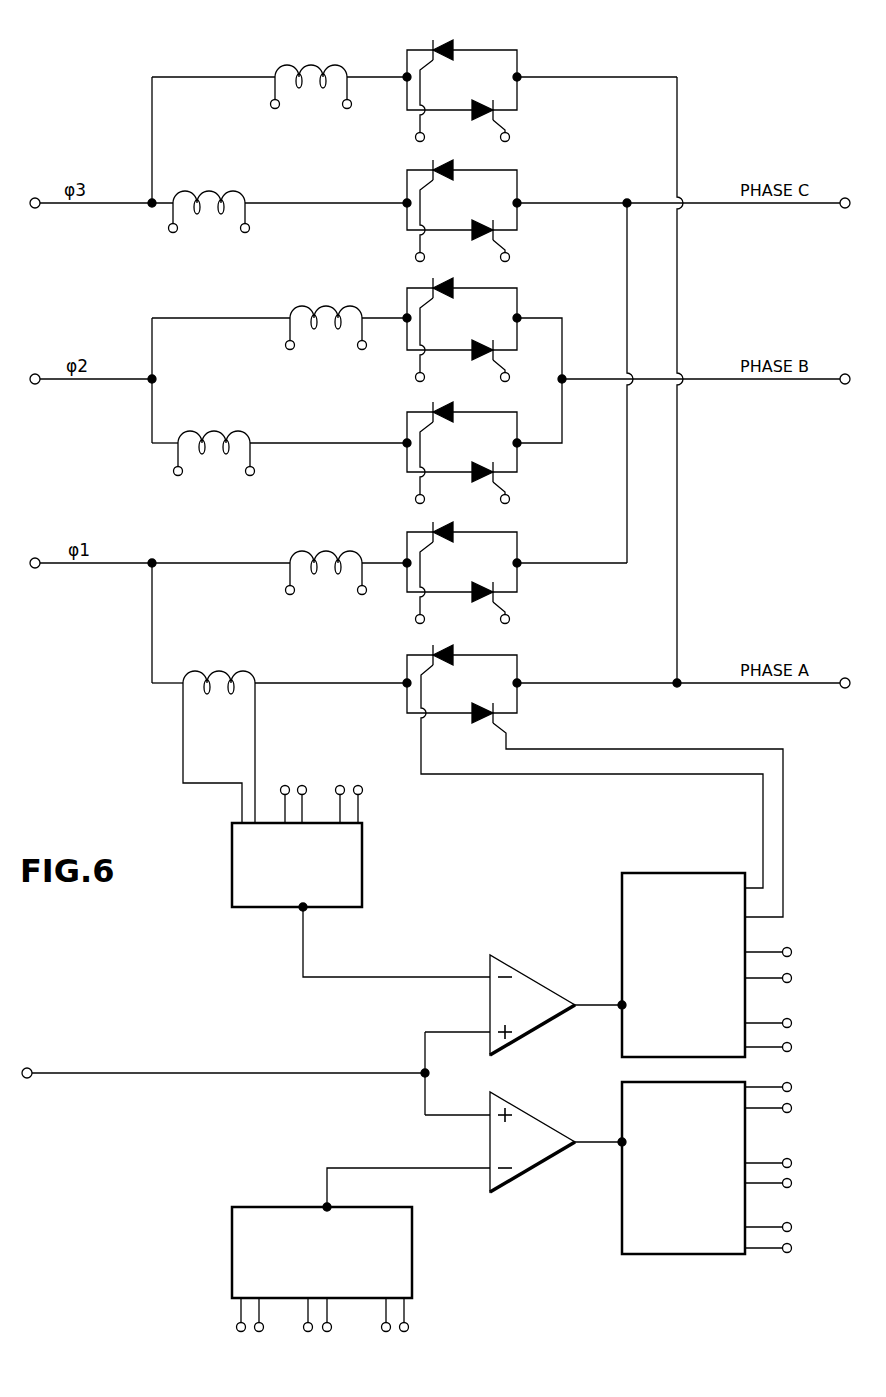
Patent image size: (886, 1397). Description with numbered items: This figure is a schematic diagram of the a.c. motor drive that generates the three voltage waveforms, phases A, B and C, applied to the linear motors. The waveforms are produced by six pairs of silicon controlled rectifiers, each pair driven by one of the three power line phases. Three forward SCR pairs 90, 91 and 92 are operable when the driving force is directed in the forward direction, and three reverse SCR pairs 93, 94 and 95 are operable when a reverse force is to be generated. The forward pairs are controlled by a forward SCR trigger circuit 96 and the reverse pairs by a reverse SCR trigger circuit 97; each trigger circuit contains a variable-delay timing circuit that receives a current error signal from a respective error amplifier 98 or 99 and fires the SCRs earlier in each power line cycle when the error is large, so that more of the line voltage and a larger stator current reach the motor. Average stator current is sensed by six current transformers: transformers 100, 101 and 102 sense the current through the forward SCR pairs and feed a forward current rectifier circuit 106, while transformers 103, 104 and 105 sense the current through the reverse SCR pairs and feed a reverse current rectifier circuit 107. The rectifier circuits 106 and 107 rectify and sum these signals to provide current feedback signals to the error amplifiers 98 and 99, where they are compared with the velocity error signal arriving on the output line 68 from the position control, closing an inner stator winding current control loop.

The output line 68 is at (27, 1078).
The forward SCR pair 90 is at (530, 700).
The forward SCR pair 91 is at (528, 474).
The forward SCR pair 92 is at (528, 232).
The reverse SCR pair 93 is at (528, 586).
The reverse SCR pair 94 is at (538, 352).
The reverse SCR pair 95 is at (528, 112).
The forward SCR trigger circuit 96 is at (682, 873).
The reverse SCR trigger circuit 97 is at (676, 1254).
The error amplifier 98 is at (538, 978).
The error amplifier 99 is at (570, 1094).
The current transformer 100 is at (207, 674).
The current transformer 101 is at (198, 432).
The current transformer 102 is at (193, 192).
The current transformer 103 is at (320, 554).
The current transformer 104 is at (332, 310).
The current transformer 105 is at (305, 66).
The forward current rectifier circuit 106 is at (363, 862).
The reverse current rectifier circuit 107 is at (413, 1268).